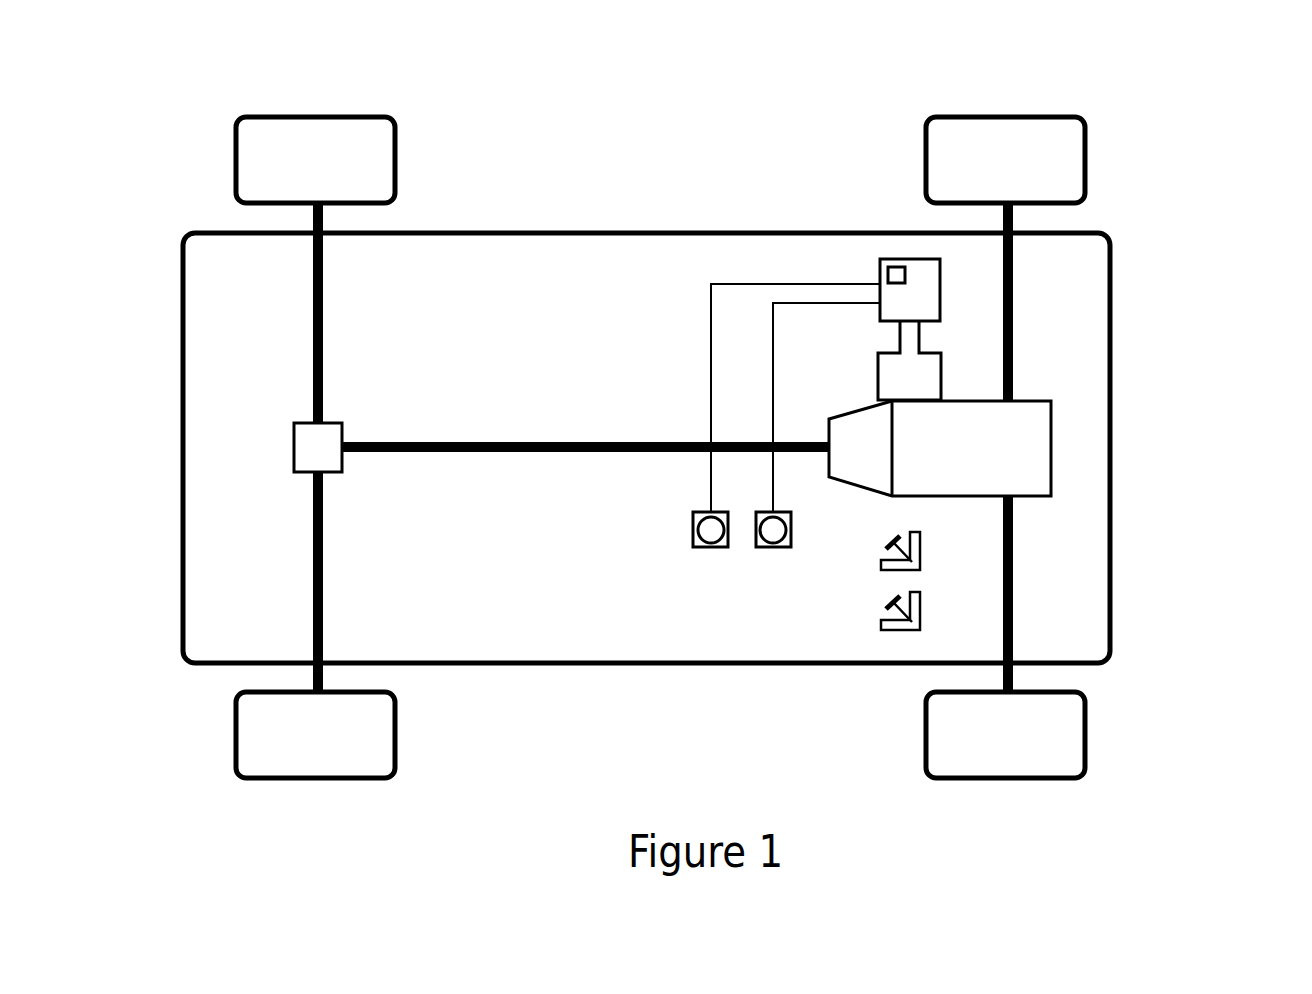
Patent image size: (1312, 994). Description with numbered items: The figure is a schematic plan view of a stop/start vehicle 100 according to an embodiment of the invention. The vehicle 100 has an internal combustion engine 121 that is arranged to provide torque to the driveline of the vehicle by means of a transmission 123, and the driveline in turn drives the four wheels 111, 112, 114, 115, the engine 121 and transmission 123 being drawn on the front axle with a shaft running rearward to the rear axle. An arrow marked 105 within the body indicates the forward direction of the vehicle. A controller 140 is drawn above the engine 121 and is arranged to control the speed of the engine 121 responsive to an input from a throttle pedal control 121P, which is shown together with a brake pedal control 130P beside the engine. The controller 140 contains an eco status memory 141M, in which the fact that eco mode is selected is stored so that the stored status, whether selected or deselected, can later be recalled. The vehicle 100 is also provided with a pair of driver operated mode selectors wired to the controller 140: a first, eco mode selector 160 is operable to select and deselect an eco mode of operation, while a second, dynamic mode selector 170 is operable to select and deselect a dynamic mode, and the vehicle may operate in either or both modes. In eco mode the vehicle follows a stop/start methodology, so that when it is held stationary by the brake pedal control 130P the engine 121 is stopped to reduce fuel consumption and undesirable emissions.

The vehicle 100 is at (1222, 118).
The vehicle body / forward direction 105 is at (508, 522).
The wheel 111 is at (1072, 170).
The wheel 112 is at (1072, 725).
The wheel 114 is at (250, 170).
The wheel 115 is at (252, 723).
The internal combustion engine 121 is at (1027, 440).
The throttle pedal control 121P is at (922, 611).
The transmission 123 is at (858, 427).
The brake pedal control 130P is at (922, 550).
The controller 140 is at (930, 297).
The eco status memory 141M is at (895, 267).
The eco mode selector 160 is at (707, 548).
The dynamic mode selector 170 is at (780, 548).